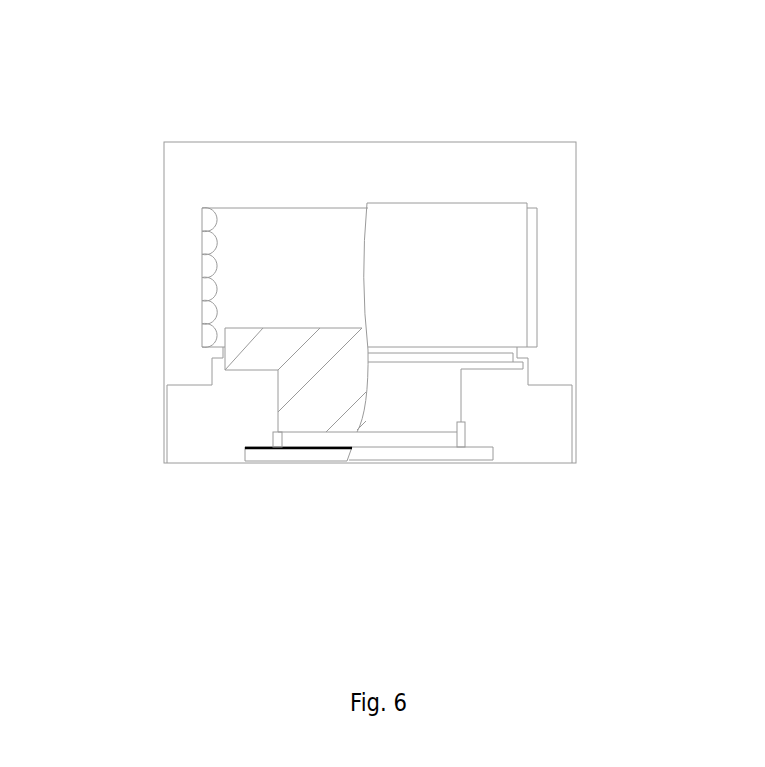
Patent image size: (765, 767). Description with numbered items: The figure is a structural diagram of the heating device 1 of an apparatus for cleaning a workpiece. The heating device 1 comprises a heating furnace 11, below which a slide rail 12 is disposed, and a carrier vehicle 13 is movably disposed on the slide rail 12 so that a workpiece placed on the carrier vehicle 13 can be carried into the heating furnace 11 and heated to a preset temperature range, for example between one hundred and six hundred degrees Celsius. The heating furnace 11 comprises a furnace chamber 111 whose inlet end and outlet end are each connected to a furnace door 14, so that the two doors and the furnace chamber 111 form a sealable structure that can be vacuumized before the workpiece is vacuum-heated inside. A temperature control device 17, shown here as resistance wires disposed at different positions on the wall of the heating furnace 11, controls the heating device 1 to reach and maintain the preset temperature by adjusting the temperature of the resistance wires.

The heating device 1 is at (142, 45).
The heating furnace 11 is at (180, 256).
The furnace chamber 111 is at (290, 244).
The slide rail 12 is at (267, 454).
The carrier vehicle 13 is at (268, 356).
The furnace door 14 is at (478, 298).
The temperature control device 17 is at (203, 210).